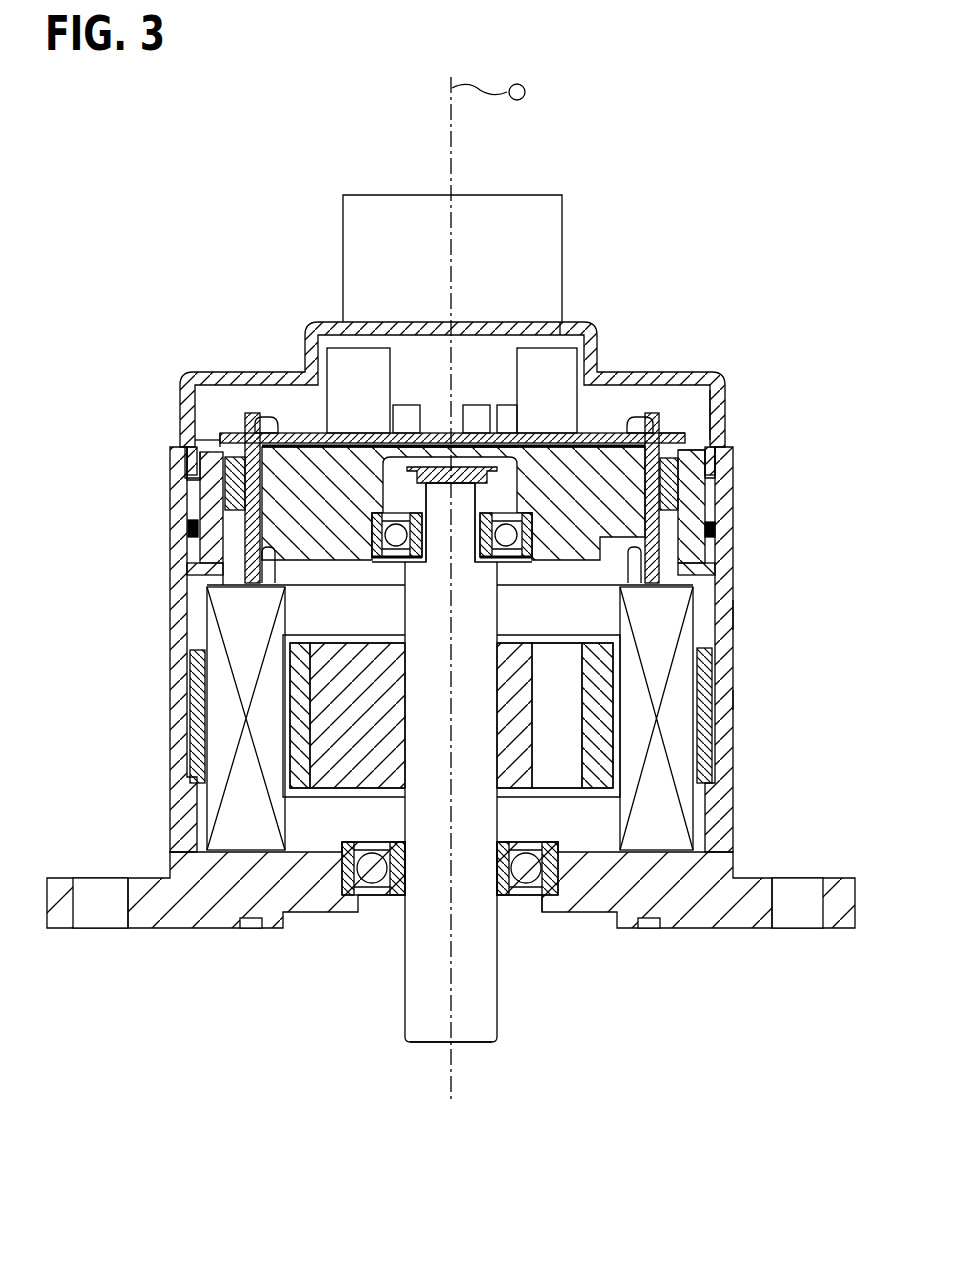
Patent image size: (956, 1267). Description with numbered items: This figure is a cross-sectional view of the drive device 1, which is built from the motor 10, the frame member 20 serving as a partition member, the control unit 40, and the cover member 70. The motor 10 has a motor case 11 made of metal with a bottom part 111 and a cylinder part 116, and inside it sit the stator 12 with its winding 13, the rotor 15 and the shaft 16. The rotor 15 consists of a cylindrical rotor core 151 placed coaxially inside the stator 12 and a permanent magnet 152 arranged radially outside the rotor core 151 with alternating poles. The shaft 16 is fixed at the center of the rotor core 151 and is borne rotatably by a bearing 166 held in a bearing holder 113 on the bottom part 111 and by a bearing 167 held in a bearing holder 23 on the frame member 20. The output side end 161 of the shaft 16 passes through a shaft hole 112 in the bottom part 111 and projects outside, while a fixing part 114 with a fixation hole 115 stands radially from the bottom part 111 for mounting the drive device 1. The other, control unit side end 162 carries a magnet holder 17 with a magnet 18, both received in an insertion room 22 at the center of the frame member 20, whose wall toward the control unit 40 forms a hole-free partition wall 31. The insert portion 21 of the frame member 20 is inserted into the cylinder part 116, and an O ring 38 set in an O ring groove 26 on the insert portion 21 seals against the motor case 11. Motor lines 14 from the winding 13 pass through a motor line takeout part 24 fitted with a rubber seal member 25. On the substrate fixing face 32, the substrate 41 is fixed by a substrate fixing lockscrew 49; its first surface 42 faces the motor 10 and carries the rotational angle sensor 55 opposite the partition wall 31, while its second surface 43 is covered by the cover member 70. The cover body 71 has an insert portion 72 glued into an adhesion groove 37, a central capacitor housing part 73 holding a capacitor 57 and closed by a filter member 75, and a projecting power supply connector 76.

The drive device 1 is at (259, 1136).
The motor 10 is at (750, 620).
The motor case 11 is at (723, 652).
The stator 12 is at (702, 742).
The winding 13 is at (672, 770).
The motor line 14 is at (655, 415).
The rotor 15 is at (295, 735).
The shaft 16 is at (423, 1025).
The magnet holder 17 is at (467, 467).
The magnet 18 is at (460, 470).
The frame member 20 is at (750, 460).
The insert portion 21 is at (698, 512).
The insertion room 22 is at (392, 497).
The bearing holder 23 is at (400, 572).
The motor line takeout part 24 is at (650, 583).
The seal member 25 is at (718, 505).
The O ring groove 26 is at (192, 528).
The partition wall 31 is at (415, 440).
The substrate fixing face 32 is at (212, 432).
The adhesion groove 37 is at (190, 440).
The O ring 38 is at (713, 528).
The control unit 40 is at (683, 440).
The substrate 41 is at (294, 433).
The first surface 42 is at (195, 462).
The second surface 43 is at (232, 455).
The substrate fixing lockscrew 49 is at (638, 417).
The rotational angle sensor 55 is at (445, 468).
The capacitor 57 is at (562, 375).
The cover member 70 is at (742, 374).
The cover body 71 is at (718, 402).
The insert portion 72 is at (710, 468).
The capacitor housing part 73 is at (578, 330).
The filter member 75 is at (438, 465).
The power supply connector 76 is at (537, 225).
The bottom part 111 is at (690, 930).
The shaft hole 112 is at (525, 905).
The bearing holder 113 is at (550, 900).
The fixing part 114 is at (838, 903).
The fixation hole 115 is at (823, 907).
The cylinder part 116 is at (725, 700).
The rotor core 151 is at (315, 702).
The permanent magnet 152 is at (295, 767).
The output side end 161 is at (480, 1042).
The control unit side end 162 is at (428, 465).
The bearing 166 is at (352, 897).
The bearing 167 is at (300, 532).